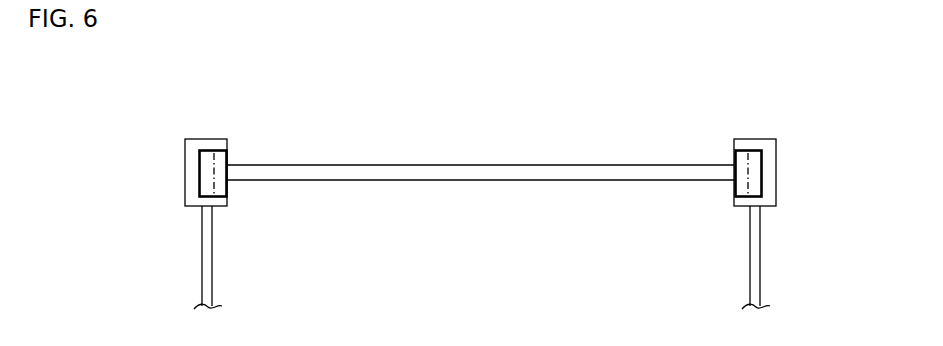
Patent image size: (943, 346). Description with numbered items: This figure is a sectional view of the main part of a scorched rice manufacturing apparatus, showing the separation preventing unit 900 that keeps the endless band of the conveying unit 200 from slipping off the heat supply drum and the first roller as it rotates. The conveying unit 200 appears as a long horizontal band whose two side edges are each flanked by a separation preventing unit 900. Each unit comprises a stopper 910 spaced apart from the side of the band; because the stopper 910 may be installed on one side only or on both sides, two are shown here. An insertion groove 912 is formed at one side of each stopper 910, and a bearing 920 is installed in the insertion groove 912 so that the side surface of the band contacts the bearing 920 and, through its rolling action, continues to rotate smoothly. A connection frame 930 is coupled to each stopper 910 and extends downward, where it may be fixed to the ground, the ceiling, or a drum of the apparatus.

The conveying unit 200 is at (482, 154).
The separation preventing unit 900 is at (480, 193).
The stopper 910 is at (188, 172).
The insertion groove 912 is at (762, 157).
The bearing 920 is at (736, 187).
The connection frame 930 is at (760, 258).